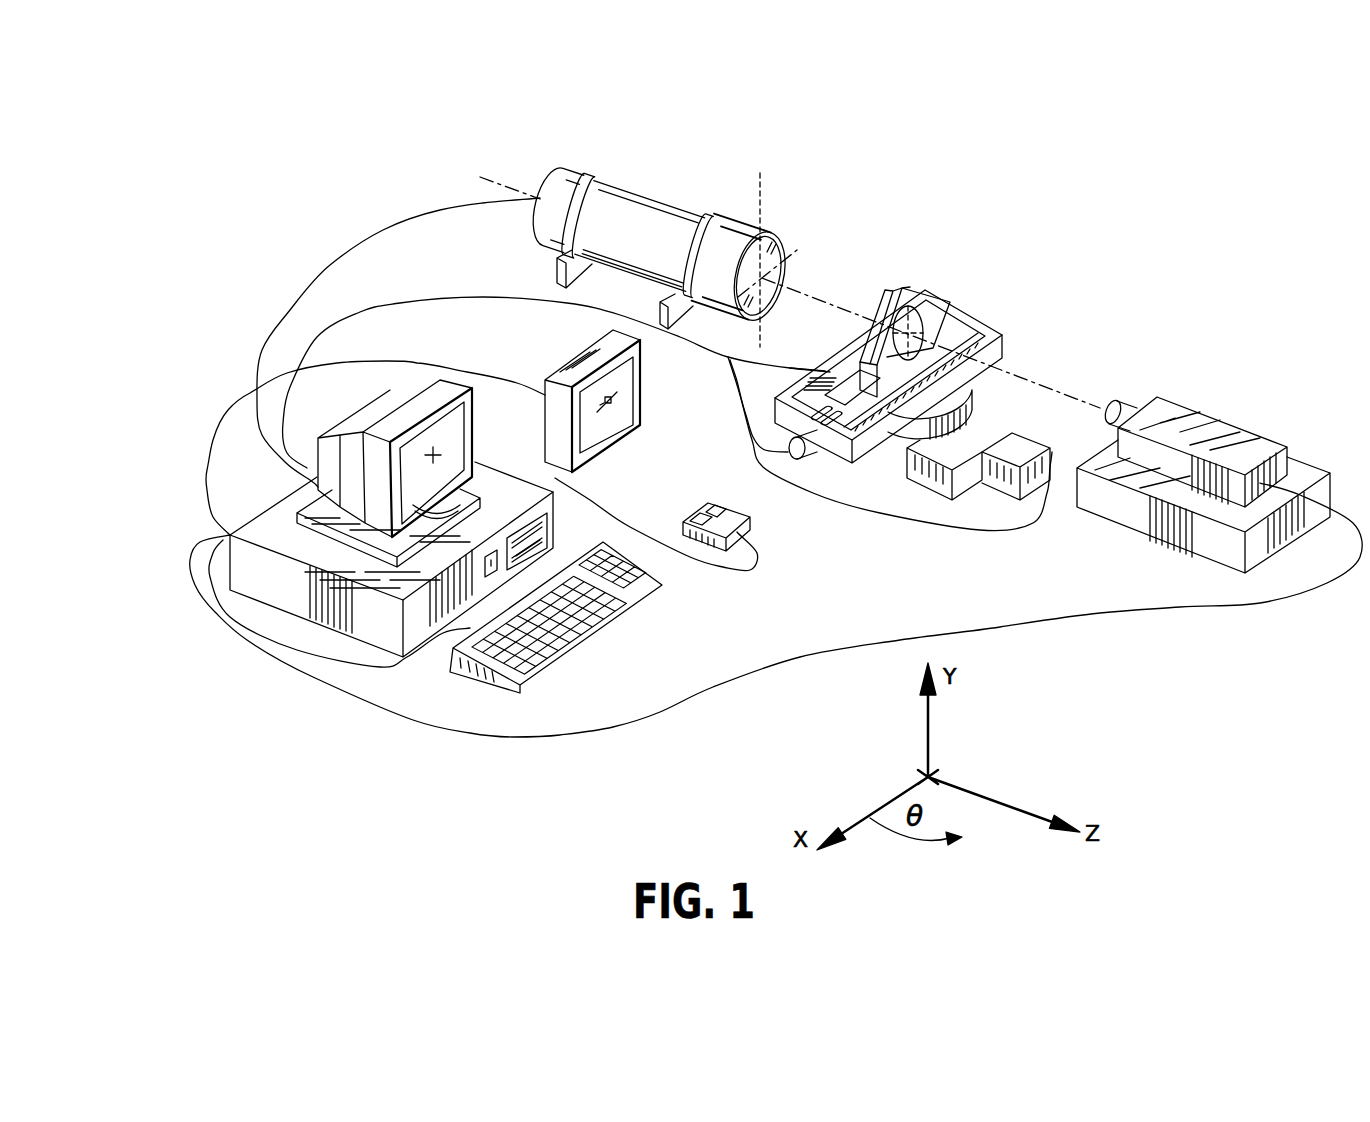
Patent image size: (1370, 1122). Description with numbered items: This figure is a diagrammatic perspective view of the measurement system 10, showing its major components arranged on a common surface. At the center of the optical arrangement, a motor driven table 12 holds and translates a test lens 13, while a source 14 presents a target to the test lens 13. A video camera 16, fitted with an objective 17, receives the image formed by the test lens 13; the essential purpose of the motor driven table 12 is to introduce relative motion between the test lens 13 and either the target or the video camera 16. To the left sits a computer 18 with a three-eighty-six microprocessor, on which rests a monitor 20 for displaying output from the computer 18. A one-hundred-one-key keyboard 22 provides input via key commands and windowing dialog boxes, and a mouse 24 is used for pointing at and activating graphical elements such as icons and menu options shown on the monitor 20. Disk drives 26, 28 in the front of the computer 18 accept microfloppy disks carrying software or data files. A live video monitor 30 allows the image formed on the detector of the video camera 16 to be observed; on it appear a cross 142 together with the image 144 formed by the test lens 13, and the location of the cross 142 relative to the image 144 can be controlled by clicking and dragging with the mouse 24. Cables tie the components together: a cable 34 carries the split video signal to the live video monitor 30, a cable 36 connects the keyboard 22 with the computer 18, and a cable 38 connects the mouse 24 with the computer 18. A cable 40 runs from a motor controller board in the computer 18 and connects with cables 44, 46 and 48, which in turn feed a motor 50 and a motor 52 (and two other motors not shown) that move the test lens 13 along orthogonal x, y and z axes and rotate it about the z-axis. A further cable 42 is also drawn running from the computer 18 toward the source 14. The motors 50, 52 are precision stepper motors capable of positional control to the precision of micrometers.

The measurement system 10 is at (940, 100).
The motor driven table 12 is at (984, 308).
The test lens 13 is at (917, 320).
The source 14 is at (657, 181).
The video camera 16 is at (1247, 414).
The objective 17 is at (1130, 398).
The computer 18 is at (298, 597).
The monitor 20 is at (356, 414).
The keyboard 22 is at (612, 627).
The mouse 24 is at (752, 520).
The disk drive 26 is at (547, 520).
The disk drive 28 is at (540, 548).
The live video monitor 30 is at (580, 355).
The cable 34 is at (217, 437).
The cable 36 is at (407, 665).
The cable 38 is at (755, 565).
The cable 40 is at (519, 292).
The laser cable 42 is at (278, 335).
The cable 44 is at (1025, 528).
The cable 46 is at (742, 412).
The cable 48 is at (788, 368).
The motor 50 is at (1033, 453).
The motor 52 is at (810, 455).
The cross 142 is at (445, 450).
The image 144 is at (613, 395).